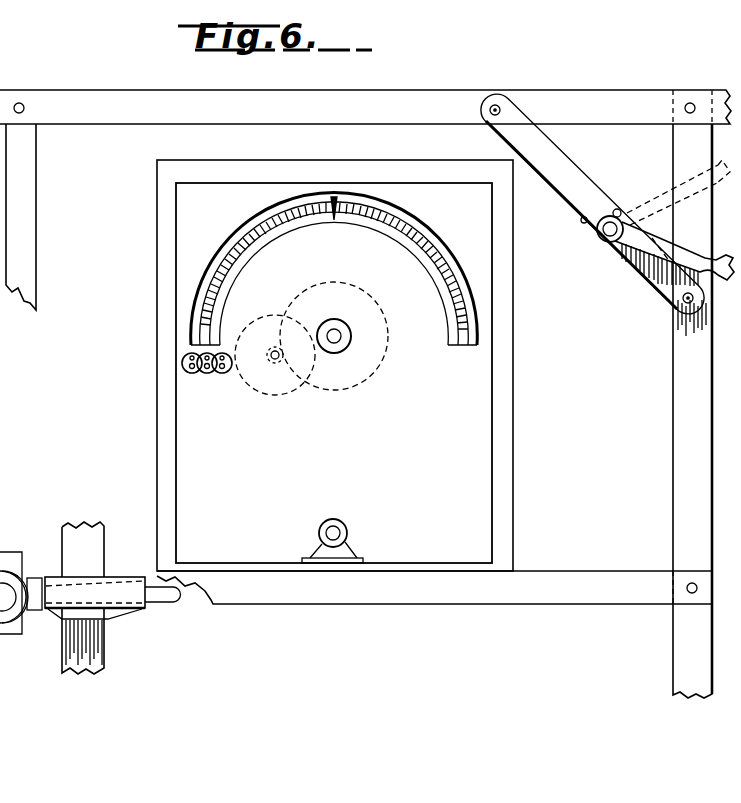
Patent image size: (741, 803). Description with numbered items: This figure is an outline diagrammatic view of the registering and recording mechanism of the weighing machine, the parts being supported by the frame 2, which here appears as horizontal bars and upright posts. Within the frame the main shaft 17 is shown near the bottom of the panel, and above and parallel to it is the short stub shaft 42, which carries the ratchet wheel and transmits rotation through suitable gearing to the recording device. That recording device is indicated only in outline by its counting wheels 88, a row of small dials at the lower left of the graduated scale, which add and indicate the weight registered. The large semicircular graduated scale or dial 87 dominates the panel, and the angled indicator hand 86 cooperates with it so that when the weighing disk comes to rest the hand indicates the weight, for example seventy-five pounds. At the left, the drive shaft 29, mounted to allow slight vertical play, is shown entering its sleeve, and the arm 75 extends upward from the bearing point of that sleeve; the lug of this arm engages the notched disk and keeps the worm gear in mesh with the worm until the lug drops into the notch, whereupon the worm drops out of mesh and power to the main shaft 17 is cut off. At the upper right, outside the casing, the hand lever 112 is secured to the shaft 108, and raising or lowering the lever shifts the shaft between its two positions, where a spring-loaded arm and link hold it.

The frame 2 is at (652, 92).
The main shaft 17 is at (336, 531).
The drive shaft 29 is at (176, 606).
The stub shaft 42 is at (338, 343).
The arm 75 is at (0, 535).
The indicator hand 86 is at (340, 197).
The graduated scale or dial 87 is at (426, 240).
The counting wheels 88 is at (196, 373).
The shaft 108 is at (607, 238).
The hand lever 112 is at (678, 248).